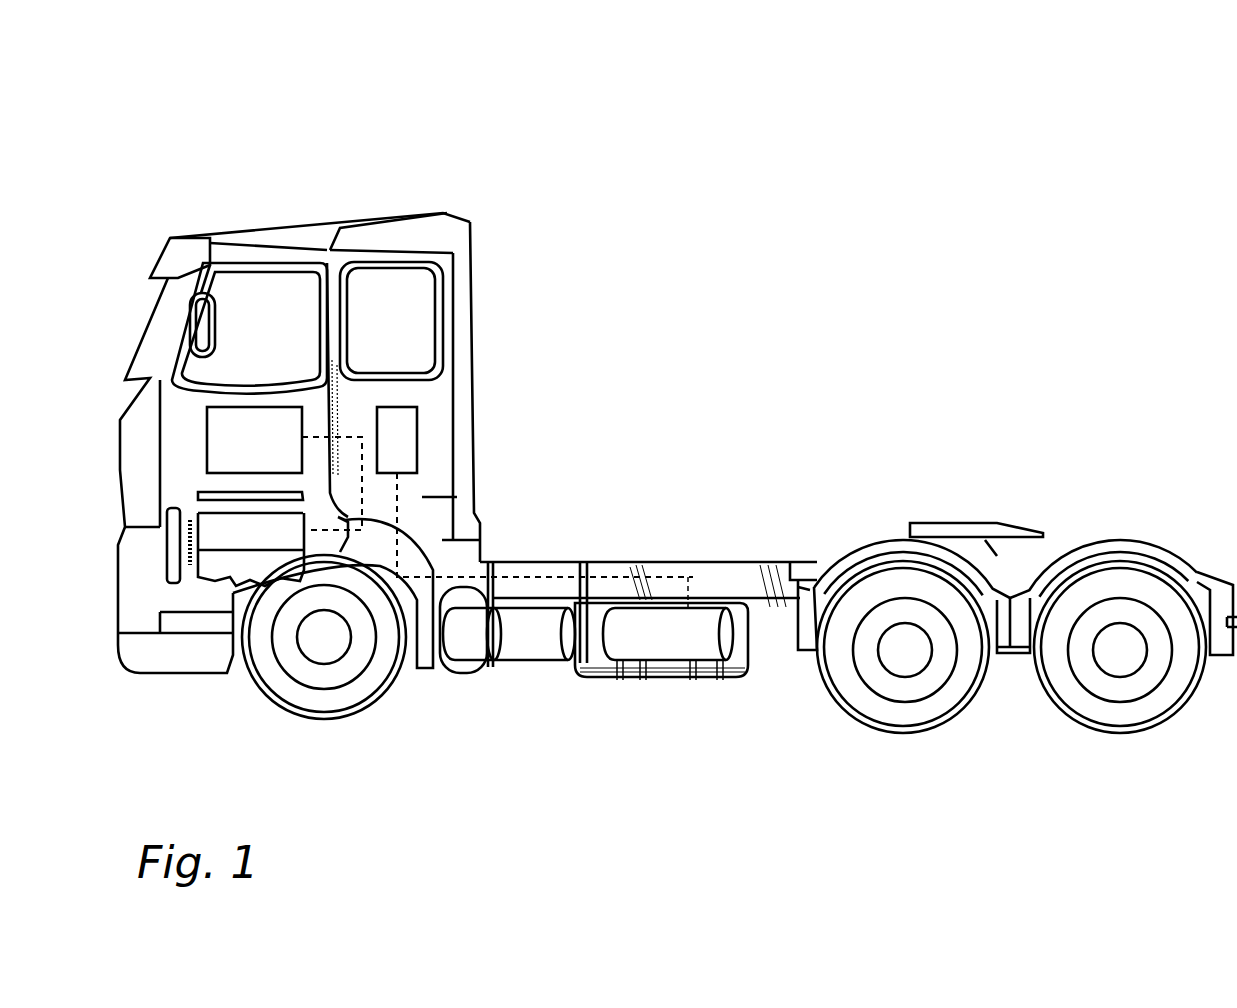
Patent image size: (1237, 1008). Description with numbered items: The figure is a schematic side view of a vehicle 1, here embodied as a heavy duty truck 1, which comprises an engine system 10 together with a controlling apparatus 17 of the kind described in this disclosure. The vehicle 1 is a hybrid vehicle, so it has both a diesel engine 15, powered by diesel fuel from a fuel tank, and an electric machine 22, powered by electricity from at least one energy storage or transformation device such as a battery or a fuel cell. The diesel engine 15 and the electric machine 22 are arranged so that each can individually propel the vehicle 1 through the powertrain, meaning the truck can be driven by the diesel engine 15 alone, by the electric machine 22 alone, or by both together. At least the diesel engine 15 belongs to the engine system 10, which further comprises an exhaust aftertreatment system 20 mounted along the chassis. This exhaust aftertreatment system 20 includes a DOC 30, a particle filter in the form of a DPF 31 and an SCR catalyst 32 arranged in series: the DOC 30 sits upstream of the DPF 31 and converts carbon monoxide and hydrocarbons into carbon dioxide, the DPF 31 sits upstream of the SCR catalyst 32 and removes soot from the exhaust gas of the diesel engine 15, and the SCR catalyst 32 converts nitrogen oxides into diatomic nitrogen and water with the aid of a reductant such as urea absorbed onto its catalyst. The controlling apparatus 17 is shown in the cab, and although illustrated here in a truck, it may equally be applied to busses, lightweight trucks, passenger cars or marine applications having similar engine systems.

The vehicle 1 is at (172, 132).
The engine system 10 is at (490, 513).
The diesel engine 15 is at (207, 577).
The controlling apparatus 17 is at (427, 437).
The exhaust aftertreatment system 20 is at (408, 766).
The electric machine 22 is at (253, 441).
The DOC 30 is at (473, 638).
The DPF 31 is at (540, 632).
The SCR catalyst 32 is at (668, 637).